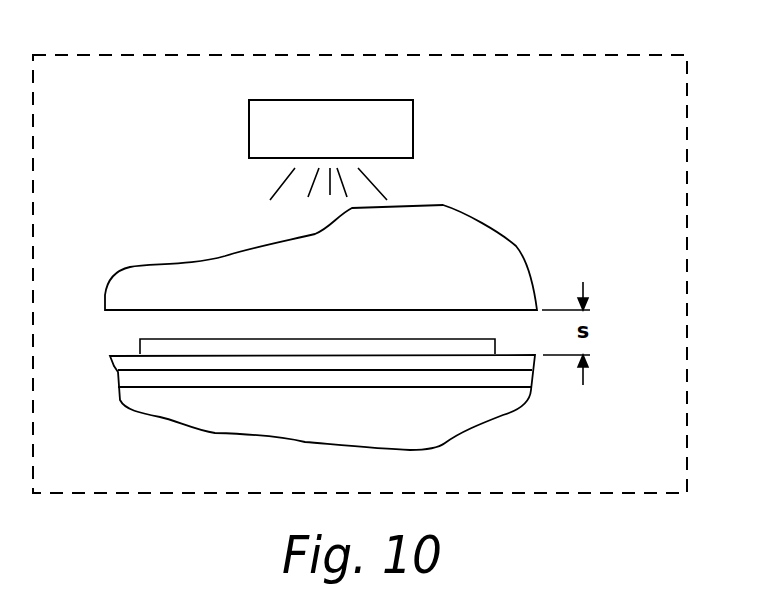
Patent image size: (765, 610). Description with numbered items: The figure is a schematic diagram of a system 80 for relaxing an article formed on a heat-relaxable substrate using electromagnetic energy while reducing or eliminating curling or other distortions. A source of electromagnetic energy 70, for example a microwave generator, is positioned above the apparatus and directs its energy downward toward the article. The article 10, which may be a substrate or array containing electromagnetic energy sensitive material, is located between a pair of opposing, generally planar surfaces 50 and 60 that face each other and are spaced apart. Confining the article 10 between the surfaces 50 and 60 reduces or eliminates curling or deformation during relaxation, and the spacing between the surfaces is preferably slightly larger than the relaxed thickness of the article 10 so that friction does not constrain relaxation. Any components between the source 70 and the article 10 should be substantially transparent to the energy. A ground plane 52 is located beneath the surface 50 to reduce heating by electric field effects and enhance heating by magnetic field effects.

The system 80 is at (687, 114).
The source of electromagnetic energy 70 is at (401, 124).
The generally planar surface 60 is at (143, 311).
The article 10 is at (140, 347).
The generally planar surface 50 is at (520, 358).
The ground plane 52 is at (522, 362).